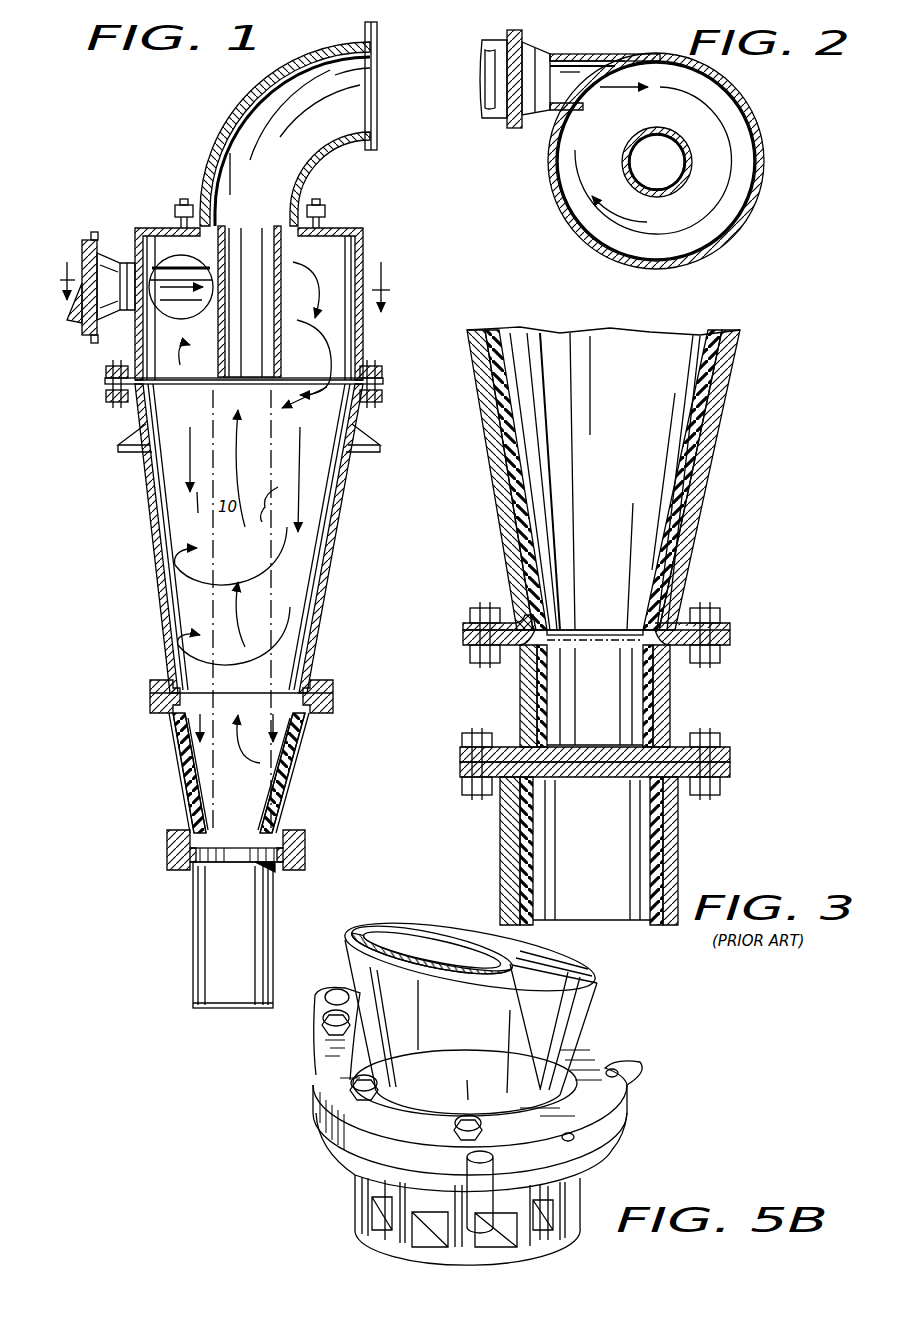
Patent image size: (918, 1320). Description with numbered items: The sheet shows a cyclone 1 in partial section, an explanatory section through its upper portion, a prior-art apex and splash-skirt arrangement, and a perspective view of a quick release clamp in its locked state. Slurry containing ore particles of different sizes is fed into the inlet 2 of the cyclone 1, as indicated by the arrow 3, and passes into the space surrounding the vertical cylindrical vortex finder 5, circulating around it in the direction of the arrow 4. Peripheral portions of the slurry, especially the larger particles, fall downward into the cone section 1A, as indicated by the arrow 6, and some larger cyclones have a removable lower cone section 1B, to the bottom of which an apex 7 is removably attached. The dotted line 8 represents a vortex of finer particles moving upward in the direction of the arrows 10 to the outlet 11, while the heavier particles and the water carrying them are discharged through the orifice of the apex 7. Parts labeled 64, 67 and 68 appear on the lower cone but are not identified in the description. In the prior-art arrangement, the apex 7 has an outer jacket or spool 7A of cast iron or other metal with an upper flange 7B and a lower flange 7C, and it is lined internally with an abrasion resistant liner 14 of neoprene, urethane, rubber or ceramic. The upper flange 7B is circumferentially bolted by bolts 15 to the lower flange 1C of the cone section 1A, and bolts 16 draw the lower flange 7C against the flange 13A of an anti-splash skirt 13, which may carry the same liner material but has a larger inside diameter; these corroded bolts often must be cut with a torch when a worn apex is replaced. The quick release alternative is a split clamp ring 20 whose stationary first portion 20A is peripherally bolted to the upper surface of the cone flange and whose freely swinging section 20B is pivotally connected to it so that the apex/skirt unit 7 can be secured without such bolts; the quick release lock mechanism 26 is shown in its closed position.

In FIG. 1, the cyclone 1 is at (140, 545).
In FIG. 2, the cyclone 1 is at (772, 150).
In FIG. 1, the cone section 1A is at (323, 568).
In FIG. 3, the cone section 1A is at (712, 455).
In FIG. 5B, the cone section 1A is at (469, 1011).
In FIG. 1, the lower cone section 1B is at (300, 783).
In FIG. 3, the lower flange 1C is at (730, 618).
In FIG. 1, the inlet 2 is at (87, 240).
In FIG. 2, the inlet 2 is at (510, 124).
In FIG. 1, the arrow 3 is at (170, 293).
In FIG. 2, the arrow 3 is at (493, 72).
In FIG. 1, the arrow 4 is at (287, 565).
In FIG. 2, the arrow 4 is at (653, 160).
In FIG. 1, the vortex finder 5 is at (318, 330).
In FIG. 2, the vortex finder 5 is at (624, 148).
In FIG. 1, the arrow 6 is at (186, 455).
In FIG. 1, the apex 7 is at (282, 912).
In FIG. 3, the apex 7 is at (680, 720).
In FIG. 5B, the apex 7 is at (583, 1200).
In FIG. 3, the jacket or spool 7A is at (670, 690).
In FIG. 3, the upper flange 7B is at (730, 645).
In FIG. 3, the lower flange 7C is at (730, 757).
In FIG. 1, the dotted line 8 is at (276, 499).
In FIG. 1, the arrows 10 is at (245, 224).
In FIG. 1, the outlet 11 is at (377, 132).
In FIG. 3, the anti-splash skirt 13 is at (685, 852).
In FIG. 3, the flange 13A is at (730, 777).
In FIG. 3, the liner 14 is at (612, 628).
In FIG. 3, the bolts 15 is at (483, 608).
In FIG. 3, the bolts 16 is at (483, 733).
In FIG. 1, the quick release split clamp ring 20 is at (308, 843).
In FIG. 5B, the first portion 20A is at (343, 1143).
In FIG. 5B, the freely swinging section 20B is at (590, 1058).
In FIG. 5B, the quick release lock mechanism 26 is at (308, 1113).
In FIG. 1, the intermediate flange 64 is at (335, 690).
In FIG. 1, the liner 67 is at (190, 763).
In FIG. 1, the liner 68 is at (282, 812).